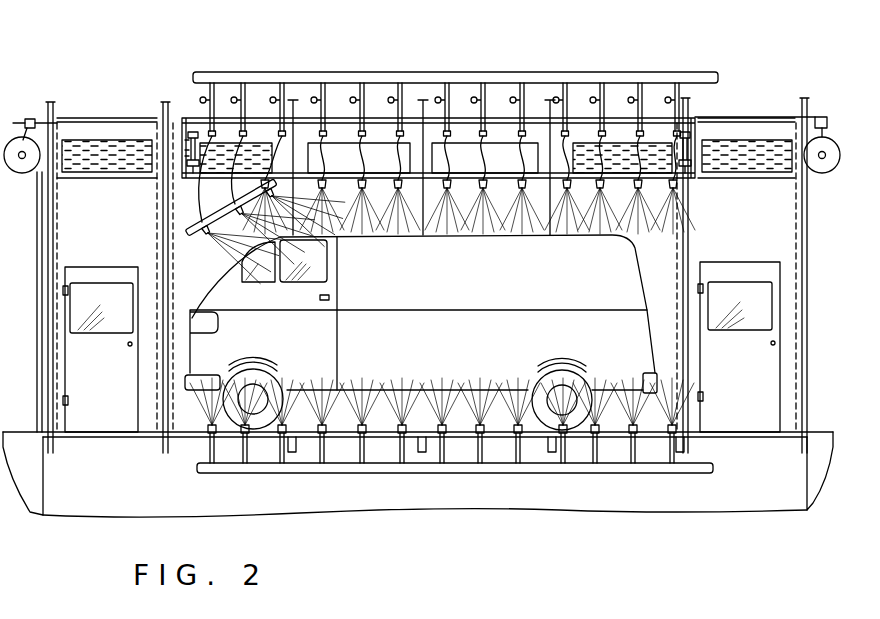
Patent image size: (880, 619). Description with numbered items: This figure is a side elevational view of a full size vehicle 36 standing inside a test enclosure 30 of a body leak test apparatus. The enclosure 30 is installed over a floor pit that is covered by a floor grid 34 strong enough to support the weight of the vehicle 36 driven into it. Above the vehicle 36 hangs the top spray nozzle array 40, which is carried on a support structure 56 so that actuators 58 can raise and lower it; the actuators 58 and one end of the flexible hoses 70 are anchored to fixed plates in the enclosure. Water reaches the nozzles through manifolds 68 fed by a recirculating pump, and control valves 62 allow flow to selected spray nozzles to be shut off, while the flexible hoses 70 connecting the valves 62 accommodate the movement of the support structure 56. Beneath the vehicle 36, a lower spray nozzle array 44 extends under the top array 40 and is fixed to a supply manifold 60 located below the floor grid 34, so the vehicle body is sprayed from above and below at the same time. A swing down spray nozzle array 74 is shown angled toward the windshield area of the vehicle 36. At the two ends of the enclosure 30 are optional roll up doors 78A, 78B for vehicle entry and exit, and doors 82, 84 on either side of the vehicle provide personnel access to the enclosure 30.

The test enclosure 30 is at (713, 115).
The floor grid 34 is at (735, 435).
The vehicle 36 is at (482, 304).
The top spray nozzle array 40 is at (659, 217).
The spray nozzle array 44 is at (195, 415).
The support structure 56 is at (545, 183).
The actuators 58 is at (187, 147).
The supply manifold 60 is at (530, 477).
The control valves 62 is at (232, 97).
The manifolds 68 is at (588, 50).
The flexible hoses 70 is at (523, 153).
The angled spray bar 74 is at (184, 225).
The vehicle entry roll up door 78A is at (22, 151).
The vehicle exit roll up door 78B is at (822, 151).
The personnel access door 82 is at (88, 420).
The personnel access door 84 is at (750, 392).